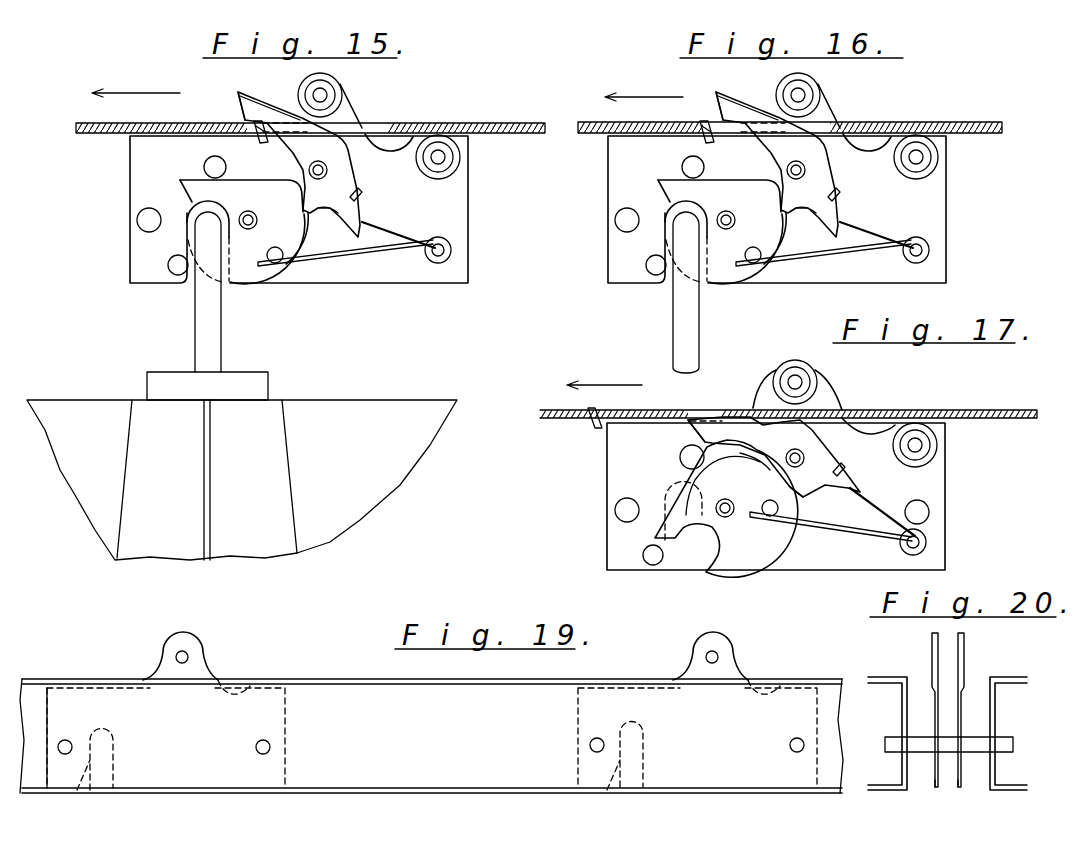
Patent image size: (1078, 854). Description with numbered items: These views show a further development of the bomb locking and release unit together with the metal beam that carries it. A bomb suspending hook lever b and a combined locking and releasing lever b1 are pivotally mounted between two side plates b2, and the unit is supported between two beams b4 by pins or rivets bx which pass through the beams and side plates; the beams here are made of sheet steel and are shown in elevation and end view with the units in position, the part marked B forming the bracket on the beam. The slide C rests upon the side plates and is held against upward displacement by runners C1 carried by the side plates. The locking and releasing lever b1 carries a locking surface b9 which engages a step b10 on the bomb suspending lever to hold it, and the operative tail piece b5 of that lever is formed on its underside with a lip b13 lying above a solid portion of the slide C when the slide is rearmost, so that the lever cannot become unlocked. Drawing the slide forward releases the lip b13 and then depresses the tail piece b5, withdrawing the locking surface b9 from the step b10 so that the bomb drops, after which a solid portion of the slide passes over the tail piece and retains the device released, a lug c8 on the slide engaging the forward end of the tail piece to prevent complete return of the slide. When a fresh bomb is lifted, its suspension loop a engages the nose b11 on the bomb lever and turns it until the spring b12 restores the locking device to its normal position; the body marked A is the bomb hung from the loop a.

In FIG. 15, the bomb suspending hook lever b is at (223, 237).
In FIG. 16, the bomb suspending hook lever b is at (777, 230).
In FIG. 17, the bomb suspending hook lever b is at (776, 496).
In FIG. 15, the combined locking and releasing lever b1 is at (330, 150).
In FIG. 16, the combined locking and releasing lever b1 is at (799, 162).
In FIG. 17, the combined locking and releasing lever b1 is at (813, 438).
In FIG. 15, the operative tail piece b5 is at (289, 118).
In FIG. 16, the operative tail piece b5 is at (748, 91).
In FIG. 15, the lip b13 is at (245, 118).
In FIG. 16, the lip b13 is at (704, 95).
In FIG. 17, the lip b13 is at (713, 443).
In FIG. 15, the locking surface b9 is at (327, 210).
In FIG. 16, the locking surface b9 is at (807, 264).
In FIG. 17, the locking surface b9 is at (812, 497).
In FIG. 15, the step b10 is at (307, 212).
In FIG. 16, the step b10 is at (769, 267).
In FIG. 17, the step b10 is at (750, 474).
In FIG. 15, the nose b11 is at (179, 183).
In FIG. 16, the nose b11 is at (701, 221).
In FIG. 17, the nose b11 is at (655, 538).
In FIG. 15, the spring b12 is at (402, 244).
In FIG. 16, the spring b12 is at (824, 228).
In FIG. 17, the spring b12 is at (871, 527).
In FIG. 15, the runner C1 is at (355, 107).
In FIG. 16, the runner C1 is at (833, 108).
In FIG. 17, the runner C1 is at (824, 393).
In FIG. 15, the lug c8 is at (264, 136).
In FIG. 16, the lug c8 is at (718, 148).
In FIG. 17, the lug c8 is at (591, 418).
In FIG. 16, the slide C is at (774, 112).
In FIG. 15, the suspension loop a is at (212, 350).
In FIG. 16, the suspension loop a is at (670, 292).
In FIG. 15, the weight block A is at (242, 466).
In FIG. 19, the bracket lug B is at (203, 664).
In FIG. 20, the bracket lug B is at (965, 655).
In FIG. 19, the pins or rivets bx is at (139, 738).
In FIG. 20, the pins or rivets bx is at (888, 740).
In FIG. 19, the beam b4 is at (431, 736).
In FIG. 20, the beam b4 is at (1013, 770).
In FIG. 20, the side plate b2 is at (940, 770).